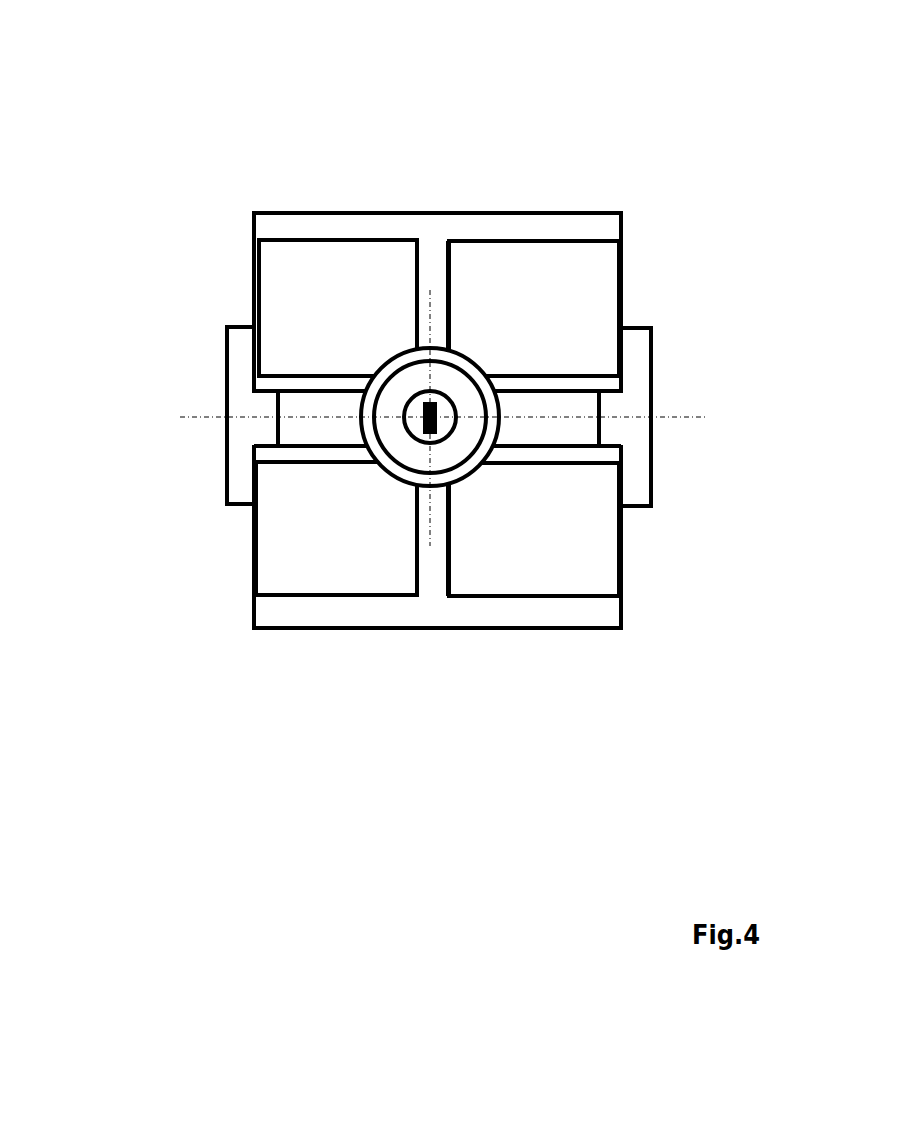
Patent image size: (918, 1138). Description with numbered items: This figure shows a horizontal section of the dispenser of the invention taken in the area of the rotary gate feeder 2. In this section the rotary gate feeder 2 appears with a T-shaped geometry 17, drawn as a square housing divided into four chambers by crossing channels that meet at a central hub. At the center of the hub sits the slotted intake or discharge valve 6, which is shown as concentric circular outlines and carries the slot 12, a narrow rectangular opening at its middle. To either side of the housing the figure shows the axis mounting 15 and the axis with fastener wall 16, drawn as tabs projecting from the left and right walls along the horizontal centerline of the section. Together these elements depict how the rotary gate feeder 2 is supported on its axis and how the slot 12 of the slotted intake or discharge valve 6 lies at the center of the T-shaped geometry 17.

The rotary gate feeder 2 is at (438, 232).
The slotted intake or discharge valve 6 is at (443, 440).
The slot 12 is at (442, 415).
The axis mounting 15 is at (312, 417).
The axis with fastener wall 16 is at (635, 417).
The T-shaped geometry 17 is at (442, 272).